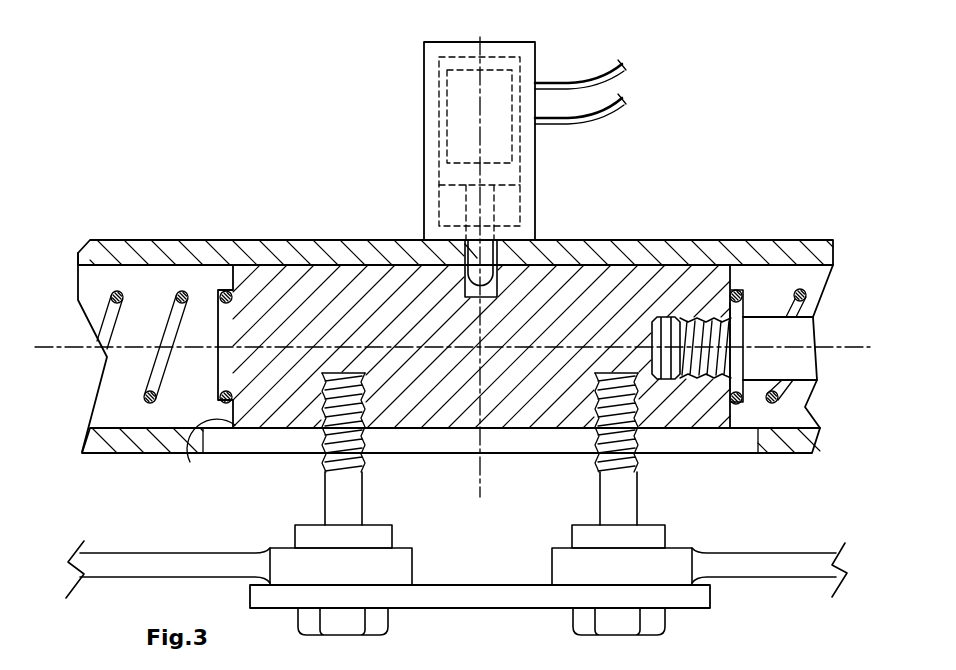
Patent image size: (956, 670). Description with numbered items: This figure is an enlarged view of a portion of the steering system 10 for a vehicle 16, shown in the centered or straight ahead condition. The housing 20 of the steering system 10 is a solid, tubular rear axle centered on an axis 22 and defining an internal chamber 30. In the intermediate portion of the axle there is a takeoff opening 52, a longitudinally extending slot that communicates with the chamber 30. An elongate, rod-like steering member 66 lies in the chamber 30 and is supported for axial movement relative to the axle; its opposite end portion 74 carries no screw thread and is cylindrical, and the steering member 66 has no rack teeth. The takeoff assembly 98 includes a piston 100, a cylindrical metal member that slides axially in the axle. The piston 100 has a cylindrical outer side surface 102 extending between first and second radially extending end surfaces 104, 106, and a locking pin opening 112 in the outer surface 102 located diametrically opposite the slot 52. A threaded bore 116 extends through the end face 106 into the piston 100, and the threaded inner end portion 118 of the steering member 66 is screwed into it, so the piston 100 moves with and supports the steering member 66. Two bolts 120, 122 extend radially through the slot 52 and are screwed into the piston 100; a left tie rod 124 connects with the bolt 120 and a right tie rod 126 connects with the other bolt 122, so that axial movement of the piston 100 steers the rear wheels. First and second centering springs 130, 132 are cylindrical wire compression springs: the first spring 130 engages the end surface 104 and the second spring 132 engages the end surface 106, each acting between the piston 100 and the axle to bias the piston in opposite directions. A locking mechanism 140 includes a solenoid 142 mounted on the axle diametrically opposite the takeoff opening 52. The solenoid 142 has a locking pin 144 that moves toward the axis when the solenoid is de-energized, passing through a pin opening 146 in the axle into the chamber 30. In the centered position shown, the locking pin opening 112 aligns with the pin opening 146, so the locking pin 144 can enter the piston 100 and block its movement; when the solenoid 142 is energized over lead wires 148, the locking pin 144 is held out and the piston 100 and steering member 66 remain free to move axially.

The steering system 10 is at (203, 152).
The vehicle 16 is at (215, 88).
The housing 20 is at (178, 235).
The axis 22 is at (70, 346).
The internal chamber 30 is at (95, 285).
The takeoff opening 52 is at (251, 445).
The steering member 66 is at (826, 357).
The opposite end portion 74 is at (790, 362).
The takeoff assembly 98 is at (296, 187).
The piston 100 is at (386, 292).
The outer side surface 102 is at (282, 265).
The first end surface 104 is at (191, 446).
The second end surface 106 is at (733, 277).
The locking pin opening 112 is at (498, 290).
The threaded bore 116 is at (664, 332).
The threaded inner end portion 118 is at (703, 362).
The bolt 120 is at (375, 620).
The bolt 122 is at (653, 630).
The left tie rod 124 is at (107, 562).
The right tie rod 126 is at (797, 565).
The first centering spring 130 is at (145, 395).
The second centering spring 132 is at (803, 296).
The locking mechanism 140 is at (413, 70).
The solenoid 142 is at (440, 113).
The locking pin 144 is at (442, 240).
The pin opening 146 is at (497, 252).
The lead wires 148 is at (570, 120).